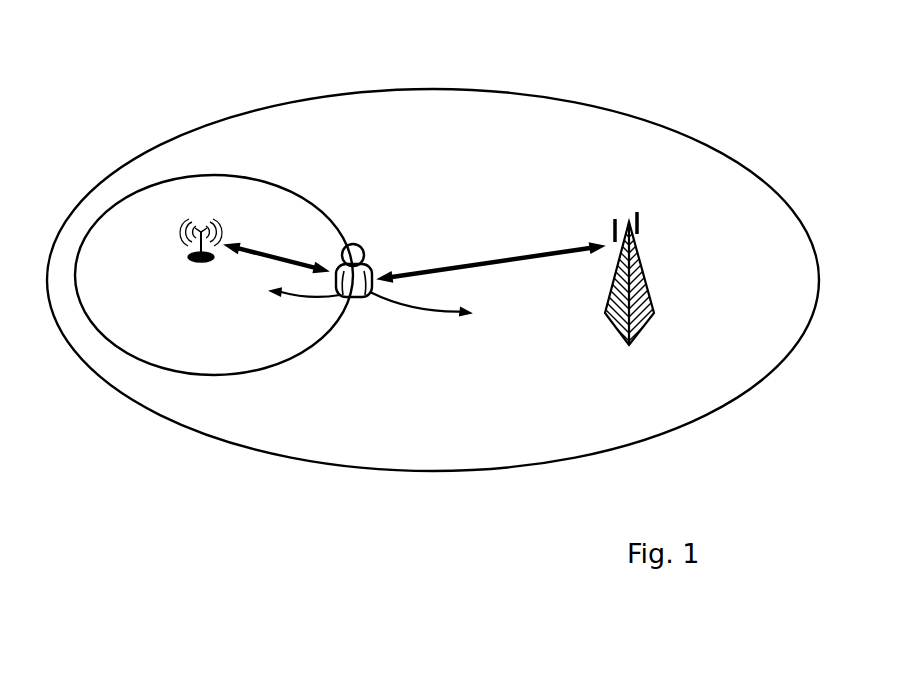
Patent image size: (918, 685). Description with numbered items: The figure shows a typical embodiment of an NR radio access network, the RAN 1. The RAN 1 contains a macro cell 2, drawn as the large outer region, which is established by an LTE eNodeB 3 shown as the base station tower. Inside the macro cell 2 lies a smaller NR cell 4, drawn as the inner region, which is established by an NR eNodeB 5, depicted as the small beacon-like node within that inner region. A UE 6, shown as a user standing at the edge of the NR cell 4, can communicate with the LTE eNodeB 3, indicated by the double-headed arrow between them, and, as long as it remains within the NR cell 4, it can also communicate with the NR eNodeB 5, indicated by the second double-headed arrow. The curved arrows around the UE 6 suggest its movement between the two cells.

The radio access network 1 is at (543, 57).
The macro cell 2 is at (421, 88).
The LTE eNodeB 3 is at (638, 268).
The NR cell 4 is at (288, 189).
The NR eNodeB 5 is at (215, 230).
The UE 6 is at (363, 243).